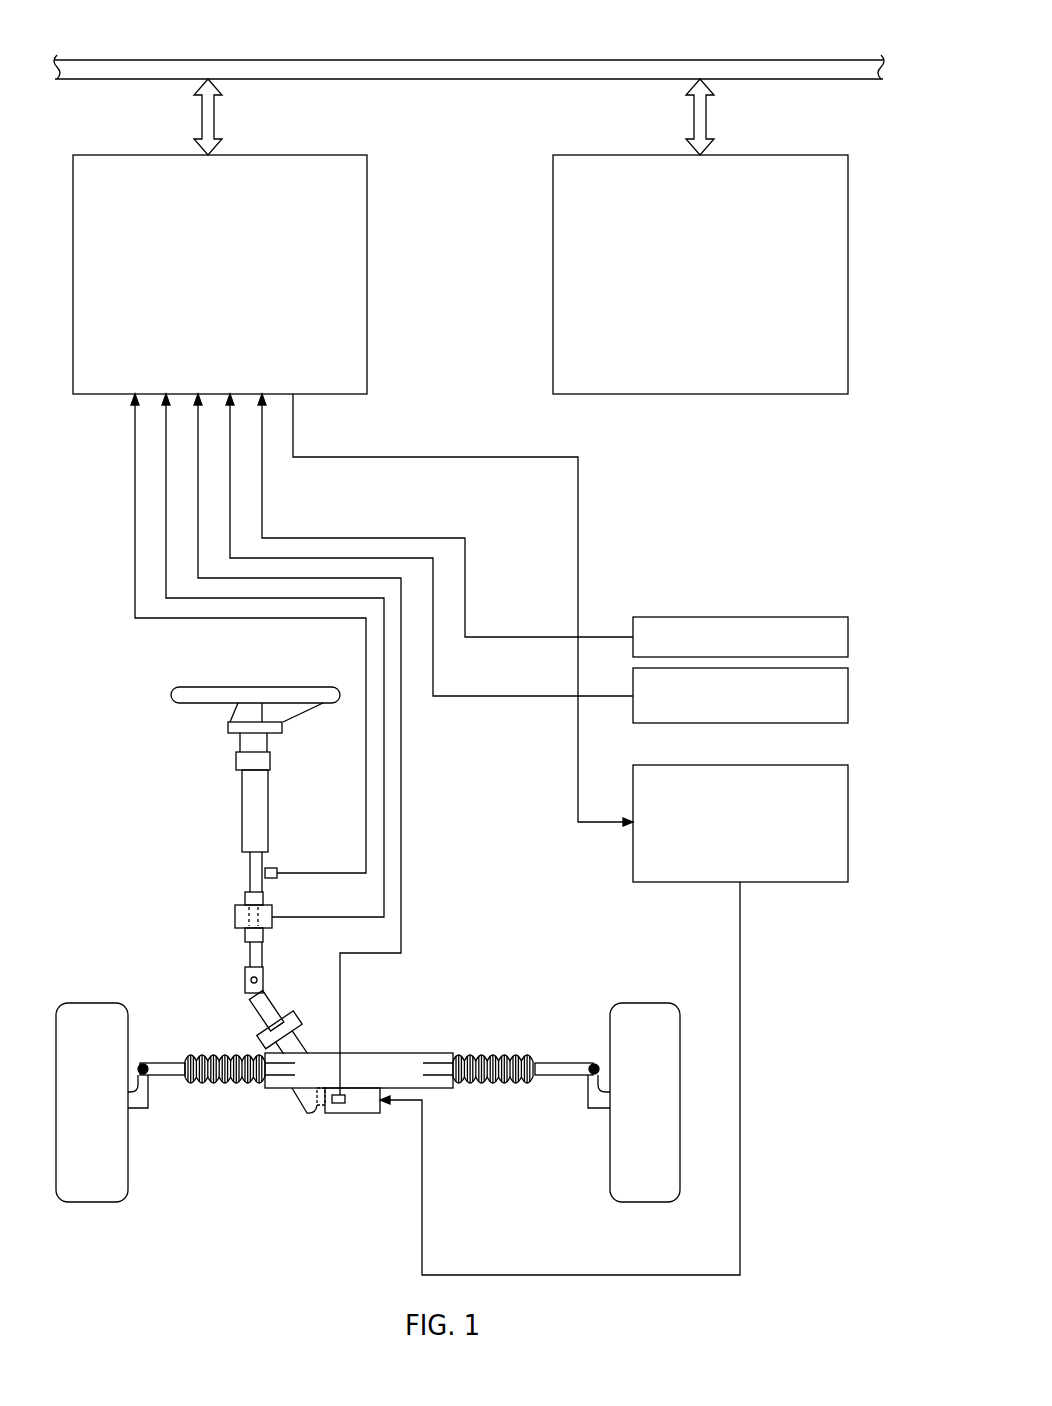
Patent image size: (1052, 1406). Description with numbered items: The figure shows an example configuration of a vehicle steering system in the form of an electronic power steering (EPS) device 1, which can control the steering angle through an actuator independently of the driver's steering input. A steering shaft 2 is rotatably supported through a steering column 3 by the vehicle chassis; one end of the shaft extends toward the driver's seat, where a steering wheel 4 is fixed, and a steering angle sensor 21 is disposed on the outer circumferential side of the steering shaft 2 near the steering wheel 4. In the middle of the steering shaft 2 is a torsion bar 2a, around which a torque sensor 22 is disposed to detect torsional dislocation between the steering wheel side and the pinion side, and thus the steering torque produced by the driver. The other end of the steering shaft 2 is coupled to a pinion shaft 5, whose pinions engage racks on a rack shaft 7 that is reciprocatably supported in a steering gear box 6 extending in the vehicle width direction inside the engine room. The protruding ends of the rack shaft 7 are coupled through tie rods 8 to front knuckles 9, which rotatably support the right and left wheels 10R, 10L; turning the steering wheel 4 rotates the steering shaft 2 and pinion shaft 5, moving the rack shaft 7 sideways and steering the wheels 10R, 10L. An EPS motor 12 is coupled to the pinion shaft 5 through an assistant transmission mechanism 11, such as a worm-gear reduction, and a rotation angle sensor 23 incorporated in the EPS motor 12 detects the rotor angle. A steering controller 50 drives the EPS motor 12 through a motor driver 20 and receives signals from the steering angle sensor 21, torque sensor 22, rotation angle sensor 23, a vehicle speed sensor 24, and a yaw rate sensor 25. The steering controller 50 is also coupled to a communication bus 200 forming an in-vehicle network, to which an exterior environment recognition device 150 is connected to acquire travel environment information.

The communication bus 200 is at (475, 60).
The steering controller 50 is at (288, 155).
The exterior environment recognition device 150 is at (806, 155).
The yaw rate sensor 25 is at (848, 637).
The vehicle speed sensor 24 is at (848, 697).
The motor driver 20 is at (848, 822).
The electronic power steering (EPS) device 1 is at (96, 696).
The steering wheel 4 is at (254, 687).
The steering column 3 is at (242, 805).
The steering angle sensor 21 is at (277, 872).
The steering shaft 2 is at (250, 875).
The torsion bar 2a is at (233, 915).
The torque sensor 22 is at (272, 917).
The pinion shaft 5 is at (256, 1010).
The steering gear box 6 is at (375, 1053).
The rack shaft 7 is at (437, 1063).
The tie rod 8 is at (175, 1081).
The front knuckle 9 is at (133, 1110).
The right wheel 10R is at (93, 1203).
The left wheel 10L is at (648, 1203).
The assistant transmission mechanism 11 is at (294, 1103).
The EPS motor 12 is at (364, 1115).
The rotation angle sensor 23 is at (338, 1105).